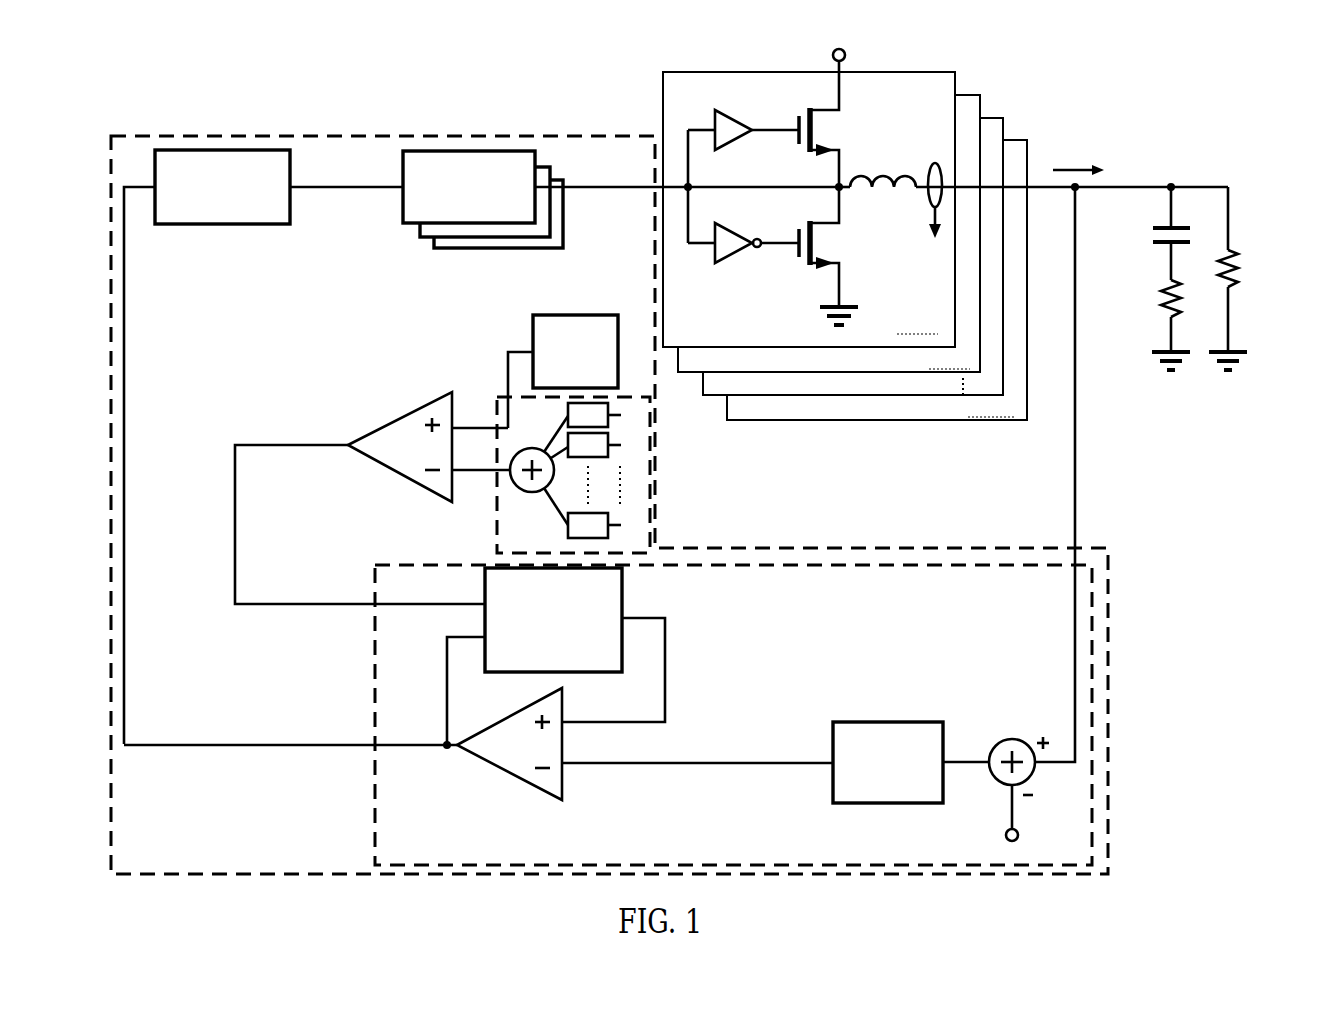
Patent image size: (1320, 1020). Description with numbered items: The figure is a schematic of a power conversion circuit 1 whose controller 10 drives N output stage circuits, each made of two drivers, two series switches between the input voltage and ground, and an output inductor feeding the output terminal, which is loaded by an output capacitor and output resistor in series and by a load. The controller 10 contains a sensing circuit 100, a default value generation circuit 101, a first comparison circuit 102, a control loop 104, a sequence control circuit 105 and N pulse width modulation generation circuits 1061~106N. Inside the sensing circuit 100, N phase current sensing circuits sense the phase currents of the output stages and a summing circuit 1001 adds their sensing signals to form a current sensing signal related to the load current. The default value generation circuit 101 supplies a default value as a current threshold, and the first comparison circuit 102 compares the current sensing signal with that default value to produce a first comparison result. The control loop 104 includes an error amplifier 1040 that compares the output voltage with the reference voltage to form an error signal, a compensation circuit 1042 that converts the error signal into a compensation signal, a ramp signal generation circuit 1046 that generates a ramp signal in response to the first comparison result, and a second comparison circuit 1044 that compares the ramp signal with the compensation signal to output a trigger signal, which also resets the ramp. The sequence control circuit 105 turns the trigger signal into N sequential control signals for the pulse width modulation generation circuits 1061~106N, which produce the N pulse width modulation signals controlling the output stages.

The power conversion circuit 1 is at (702, 446).
The controller 10 is at (160, 856).
The sensing circuit 100 is at (573, 475).
The summing circuit 1001 is at (536, 458).
The default value generation circuit 101 is at (597, 365).
The first comparison circuit 102 is at (424, 466).
The control loop 104 is at (433, 853).
The error amplifier 1040 is at (1021, 774).
The compensation circuit 1042 is at (914, 775).
The second comparison circuit 1044 is at (540, 759).
The ramp signal generation circuit 1046 is at (580, 640).
The sequence control circuit 105 is at (245, 200).
The pulse width modulation generation circuit 1061 is at (483, 199).
The pulse width modulation generation circuit 106N is at (528, 201).